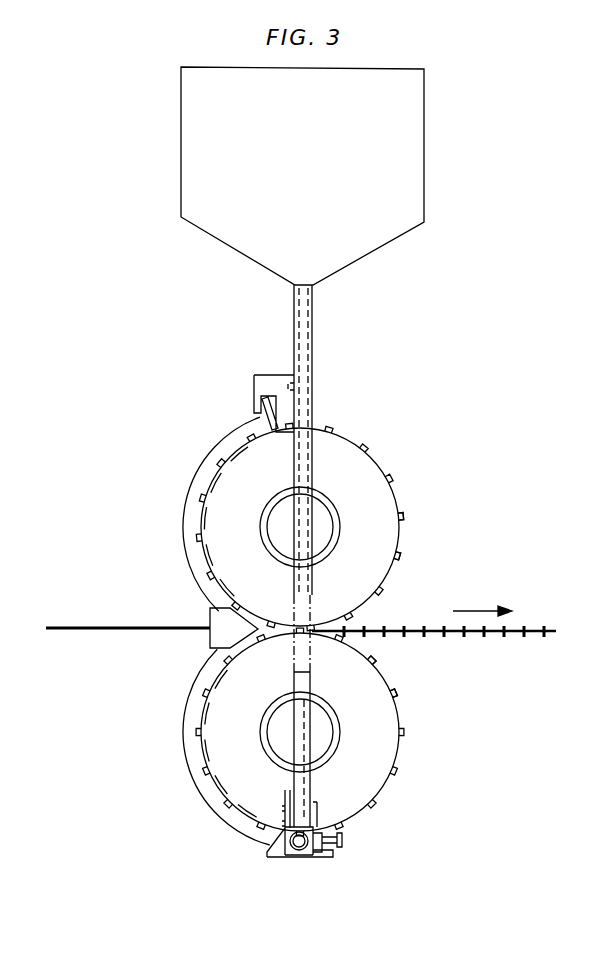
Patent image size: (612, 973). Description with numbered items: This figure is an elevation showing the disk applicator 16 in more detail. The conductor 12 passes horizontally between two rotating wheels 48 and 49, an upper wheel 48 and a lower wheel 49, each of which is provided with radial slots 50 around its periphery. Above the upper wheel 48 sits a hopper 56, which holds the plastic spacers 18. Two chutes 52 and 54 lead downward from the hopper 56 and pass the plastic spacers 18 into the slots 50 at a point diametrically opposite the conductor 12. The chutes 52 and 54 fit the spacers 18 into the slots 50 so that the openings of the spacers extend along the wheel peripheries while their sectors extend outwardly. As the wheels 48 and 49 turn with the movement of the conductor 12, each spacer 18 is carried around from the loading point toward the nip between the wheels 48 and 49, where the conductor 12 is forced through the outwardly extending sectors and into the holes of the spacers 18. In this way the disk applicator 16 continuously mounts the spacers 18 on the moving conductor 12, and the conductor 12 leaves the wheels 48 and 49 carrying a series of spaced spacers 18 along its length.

The conductor 12 is at (158, 626).
The disk applicator 16 is at (452, 427).
The plastic spacers 18 is at (203, 552).
The rotating wheel 48 is at (357, 475).
The rotating wheel 49 is at (384, 714).
The radial slots 50 is at (401, 554).
The chute 52 is at (309, 378).
The chute 54 is at (300, 340).
The hopper 56 is at (424, 152).